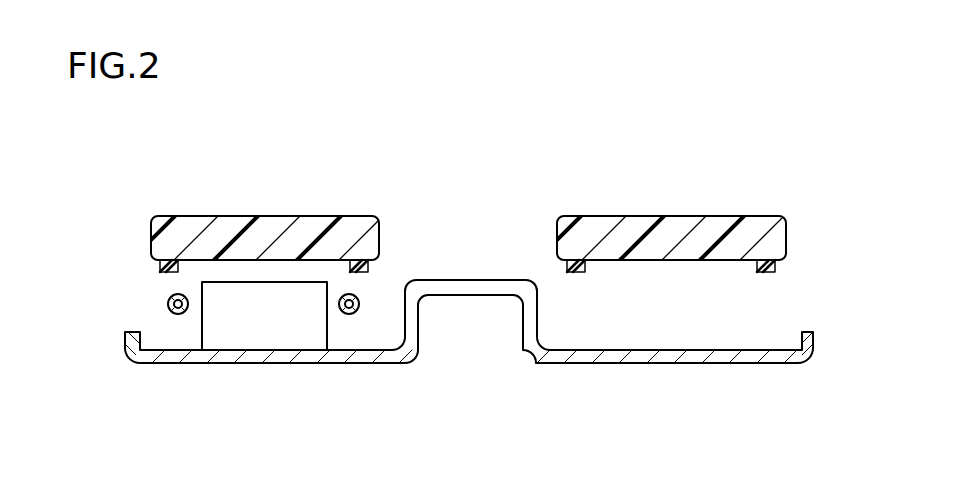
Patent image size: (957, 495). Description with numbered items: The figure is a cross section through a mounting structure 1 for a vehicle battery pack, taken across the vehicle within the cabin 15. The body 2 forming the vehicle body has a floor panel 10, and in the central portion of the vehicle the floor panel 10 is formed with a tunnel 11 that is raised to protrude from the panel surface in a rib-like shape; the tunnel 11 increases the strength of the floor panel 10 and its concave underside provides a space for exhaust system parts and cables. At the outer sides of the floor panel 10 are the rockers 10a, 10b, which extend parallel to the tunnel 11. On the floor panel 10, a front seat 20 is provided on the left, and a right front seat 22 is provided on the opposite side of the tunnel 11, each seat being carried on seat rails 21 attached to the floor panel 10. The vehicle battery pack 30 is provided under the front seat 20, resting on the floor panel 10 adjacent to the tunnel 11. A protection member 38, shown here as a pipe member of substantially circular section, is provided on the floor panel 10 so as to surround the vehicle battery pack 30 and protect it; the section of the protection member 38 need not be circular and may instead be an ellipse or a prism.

The mounting structure 1 is at (744, 130).
The body 2 is at (426, 376).
The floor panel 10 is at (478, 360).
The rocker 10a is at (126, 339).
The rocker 10b is at (814, 338).
The tunnel 11 is at (496, 286).
The cabin 15 is at (337, 130).
The front seat 20 is at (264, 232).
The seat rail 21 is at (160, 266).
The right front seat 22 is at (671, 232).
The vehicle battery pack 30 is at (262, 330).
The protection member 38 is at (168, 303).